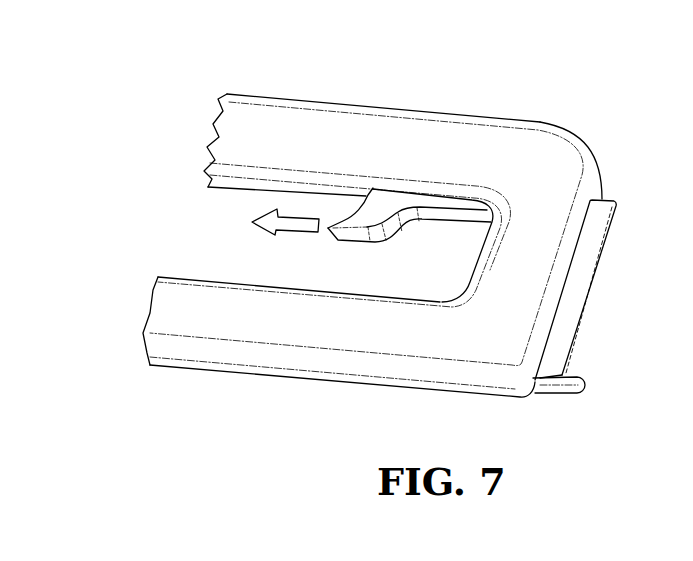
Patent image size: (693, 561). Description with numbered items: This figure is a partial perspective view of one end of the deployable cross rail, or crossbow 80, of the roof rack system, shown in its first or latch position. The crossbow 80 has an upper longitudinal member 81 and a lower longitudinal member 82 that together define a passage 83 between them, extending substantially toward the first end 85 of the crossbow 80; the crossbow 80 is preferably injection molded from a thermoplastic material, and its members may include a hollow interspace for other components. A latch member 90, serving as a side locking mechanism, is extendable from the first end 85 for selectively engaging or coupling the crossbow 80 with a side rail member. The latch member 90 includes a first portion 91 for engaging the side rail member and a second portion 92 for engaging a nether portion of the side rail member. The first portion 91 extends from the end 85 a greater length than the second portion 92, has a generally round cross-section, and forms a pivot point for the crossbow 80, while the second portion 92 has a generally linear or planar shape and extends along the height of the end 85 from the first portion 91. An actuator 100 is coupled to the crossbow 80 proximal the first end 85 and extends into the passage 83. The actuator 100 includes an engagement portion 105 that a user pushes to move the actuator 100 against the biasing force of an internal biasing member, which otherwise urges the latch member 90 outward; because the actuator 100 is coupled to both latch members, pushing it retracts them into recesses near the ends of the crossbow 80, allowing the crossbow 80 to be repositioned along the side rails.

The crossbow 80 is at (412, 217).
The upper longitudinal member 81 is at (254, 113).
The lower longitudinal member 82 is at (283, 362).
The passage 83 is at (230, 186).
The first end 85 is at (550, 152).
The latch member 90 is at (607, 296).
The first portion 91 is at (568, 375).
The second portion 92 is at (580, 278).
The actuator 100 is at (336, 241).
The engagement portion 105 is at (353, 218).